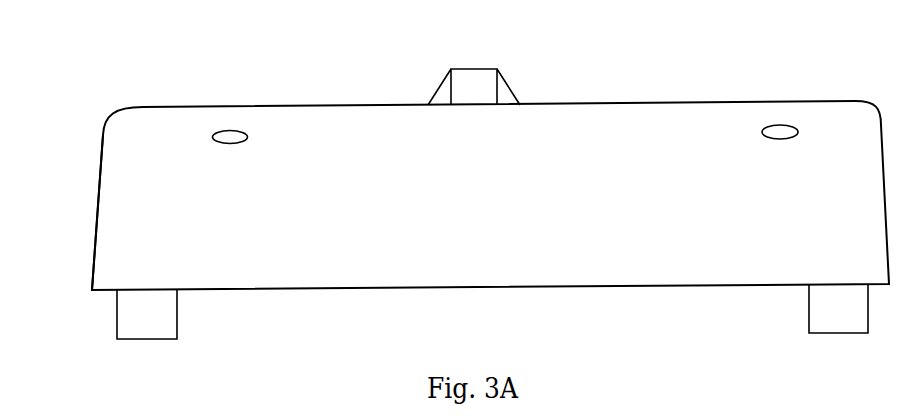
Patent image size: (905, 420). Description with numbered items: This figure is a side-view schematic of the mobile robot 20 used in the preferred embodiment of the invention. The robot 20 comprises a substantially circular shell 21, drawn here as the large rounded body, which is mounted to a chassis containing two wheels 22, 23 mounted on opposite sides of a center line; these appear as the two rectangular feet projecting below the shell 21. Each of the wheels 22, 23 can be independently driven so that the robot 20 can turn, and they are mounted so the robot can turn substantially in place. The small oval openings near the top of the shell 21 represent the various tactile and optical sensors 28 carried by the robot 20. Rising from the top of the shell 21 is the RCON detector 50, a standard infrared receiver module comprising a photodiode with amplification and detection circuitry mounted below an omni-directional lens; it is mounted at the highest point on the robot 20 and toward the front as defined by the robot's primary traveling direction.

The robot 20 is at (143, 107).
The shell 21 is at (97, 203).
The wheel 22 is at (143, 339).
The wheel 23 is at (845, 333).
The tactile and optical sensors 28 is at (228, 133).
The RCON detector 50 is at (460, 68).